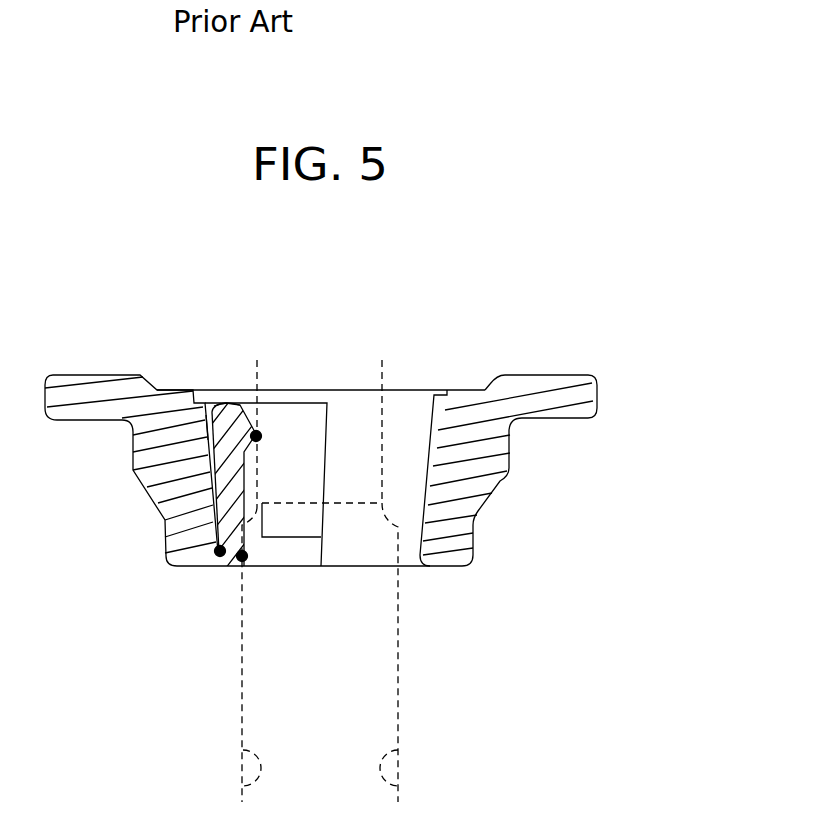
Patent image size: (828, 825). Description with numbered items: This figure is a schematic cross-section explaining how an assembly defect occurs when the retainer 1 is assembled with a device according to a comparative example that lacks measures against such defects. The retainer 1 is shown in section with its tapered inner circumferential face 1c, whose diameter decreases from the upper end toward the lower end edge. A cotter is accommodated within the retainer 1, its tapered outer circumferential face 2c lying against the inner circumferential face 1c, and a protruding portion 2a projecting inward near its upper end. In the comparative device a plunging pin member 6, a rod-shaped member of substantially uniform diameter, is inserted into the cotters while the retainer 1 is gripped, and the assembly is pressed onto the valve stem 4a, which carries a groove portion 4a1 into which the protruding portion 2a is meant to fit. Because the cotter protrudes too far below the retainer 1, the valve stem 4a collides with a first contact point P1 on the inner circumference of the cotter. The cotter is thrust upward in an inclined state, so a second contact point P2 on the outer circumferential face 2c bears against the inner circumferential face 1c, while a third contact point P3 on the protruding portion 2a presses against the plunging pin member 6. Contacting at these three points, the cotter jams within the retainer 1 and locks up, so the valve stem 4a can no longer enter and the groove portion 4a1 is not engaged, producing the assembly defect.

The retainer 1 is at (510, 464).
The inner circumferential face 1c is at (208, 429).
The protruding portion 2a is at (270, 404).
The outer circumferential face 2c is at (214, 459).
The plunging pin member 6 is at (383, 380).
The valve stem 4a is at (400, 622).
The groove portion 4a1 is at (240, 767).
The first contact point P1 is at (239, 560).
The second contact point P2 is at (216, 555).
The third contact point P3 is at (259, 431).